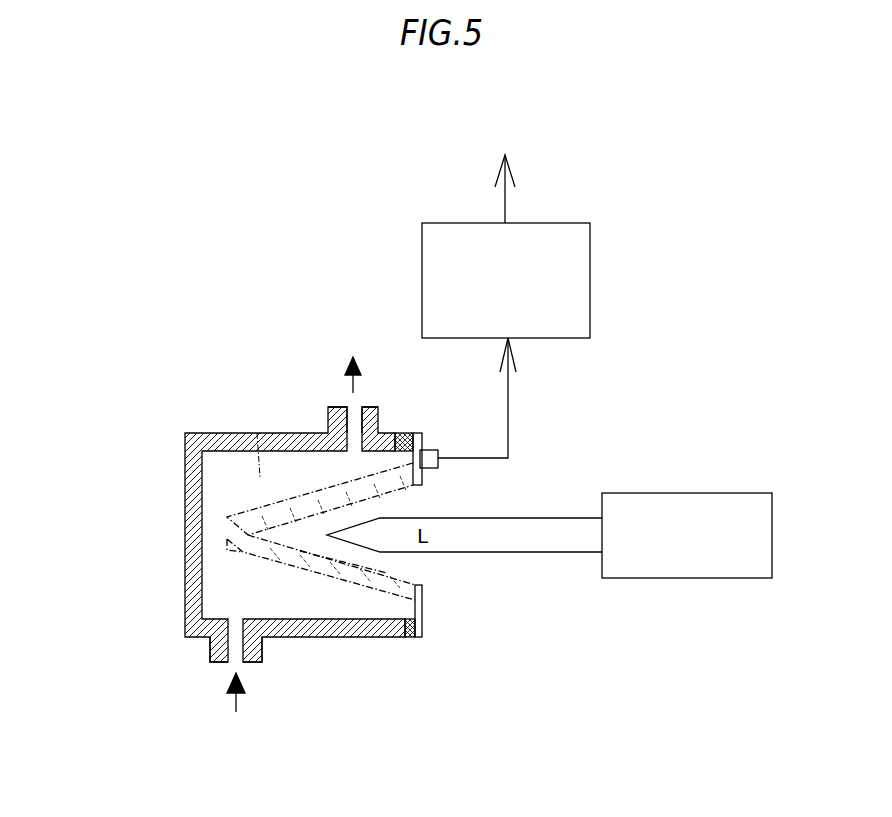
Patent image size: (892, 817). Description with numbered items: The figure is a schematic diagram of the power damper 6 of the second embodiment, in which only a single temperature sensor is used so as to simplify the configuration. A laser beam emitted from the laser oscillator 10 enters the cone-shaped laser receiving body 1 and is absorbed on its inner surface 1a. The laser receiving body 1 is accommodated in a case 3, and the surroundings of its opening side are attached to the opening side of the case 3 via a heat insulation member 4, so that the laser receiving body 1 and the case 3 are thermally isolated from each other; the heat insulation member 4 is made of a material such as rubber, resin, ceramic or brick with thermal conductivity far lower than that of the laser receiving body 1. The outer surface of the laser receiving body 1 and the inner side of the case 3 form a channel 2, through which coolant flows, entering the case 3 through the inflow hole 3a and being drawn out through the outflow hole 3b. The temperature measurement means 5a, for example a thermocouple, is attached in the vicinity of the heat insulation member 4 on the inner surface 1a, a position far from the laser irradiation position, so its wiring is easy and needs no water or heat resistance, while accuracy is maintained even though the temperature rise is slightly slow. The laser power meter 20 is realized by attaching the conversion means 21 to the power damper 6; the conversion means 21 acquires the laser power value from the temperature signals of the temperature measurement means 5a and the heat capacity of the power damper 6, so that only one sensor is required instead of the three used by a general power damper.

The laser receiving body 1 is at (423, 625).
The inner surface 1a is at (383, 573).
The channel 2 is at (257, 433).
The case 3 is at (185, 455).
The inflow hole 3a is at (230, 663).
The outflow hole 3b is at (328, 413).
The heat insulation member 4 is at (401, 434).
The temperature measurement means 5a is at (438, 462).
The power damper 6 is at (427, 692).
The laser oscillator 10 is at (667, 554).
The laser power meter 20 is at (596, 191).
The conversion means 21 is at (567, 310).